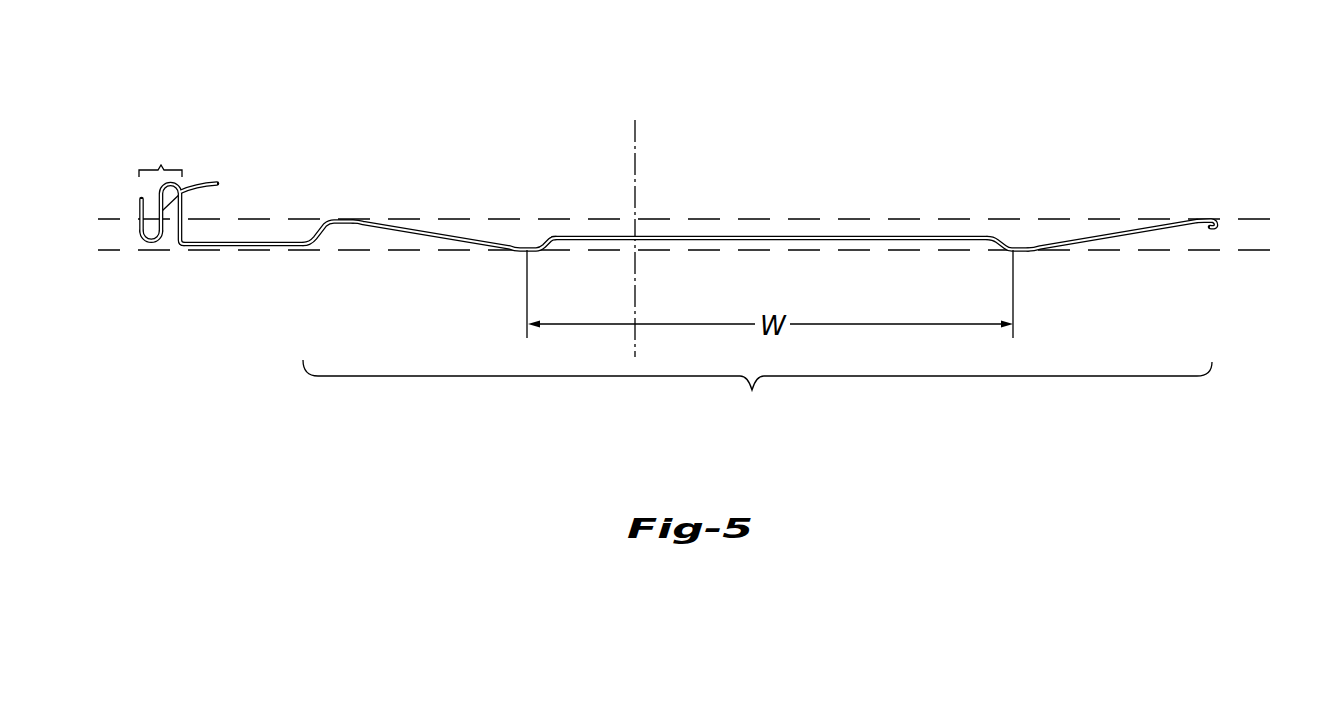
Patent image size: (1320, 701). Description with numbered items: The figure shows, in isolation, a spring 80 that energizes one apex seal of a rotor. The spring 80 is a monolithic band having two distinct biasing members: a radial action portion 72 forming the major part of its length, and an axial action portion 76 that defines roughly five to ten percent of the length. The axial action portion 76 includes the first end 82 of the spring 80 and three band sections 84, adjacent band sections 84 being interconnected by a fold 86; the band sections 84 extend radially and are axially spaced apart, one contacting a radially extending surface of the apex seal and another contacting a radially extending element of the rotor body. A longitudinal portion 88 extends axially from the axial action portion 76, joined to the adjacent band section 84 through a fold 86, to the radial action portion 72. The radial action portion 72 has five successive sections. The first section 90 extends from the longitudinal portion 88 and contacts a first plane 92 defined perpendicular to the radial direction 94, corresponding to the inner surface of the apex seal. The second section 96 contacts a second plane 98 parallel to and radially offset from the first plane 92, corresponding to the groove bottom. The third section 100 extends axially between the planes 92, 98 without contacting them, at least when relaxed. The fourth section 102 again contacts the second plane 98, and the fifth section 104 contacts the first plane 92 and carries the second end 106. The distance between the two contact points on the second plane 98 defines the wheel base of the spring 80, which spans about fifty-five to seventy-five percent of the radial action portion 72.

The radial action portion 72 is at (675, 242).
The axial action portion 76 is at (157, 192).
The spring 80 is at (1155, 154).
The first end 82 is at (140, 198).
The band sections 84 is at (217, 184).
The fold 86 is at (150, 244).
The longitudinal portion 88 is at (240, 272).
The first section 90 is at (337, 205).
The first plane 92 is at (260, 217).
The radial direction 94 is at (637, 138).
The second section 96 is at (437, 195).
The second plane 98 is at (1225, 253).
The third section 100 is at (741, 192).
The fourth section 102 is at (1036, 188).
The fifth section 104 is at (1161, 190).
The second end 106 is at (1222, 222).